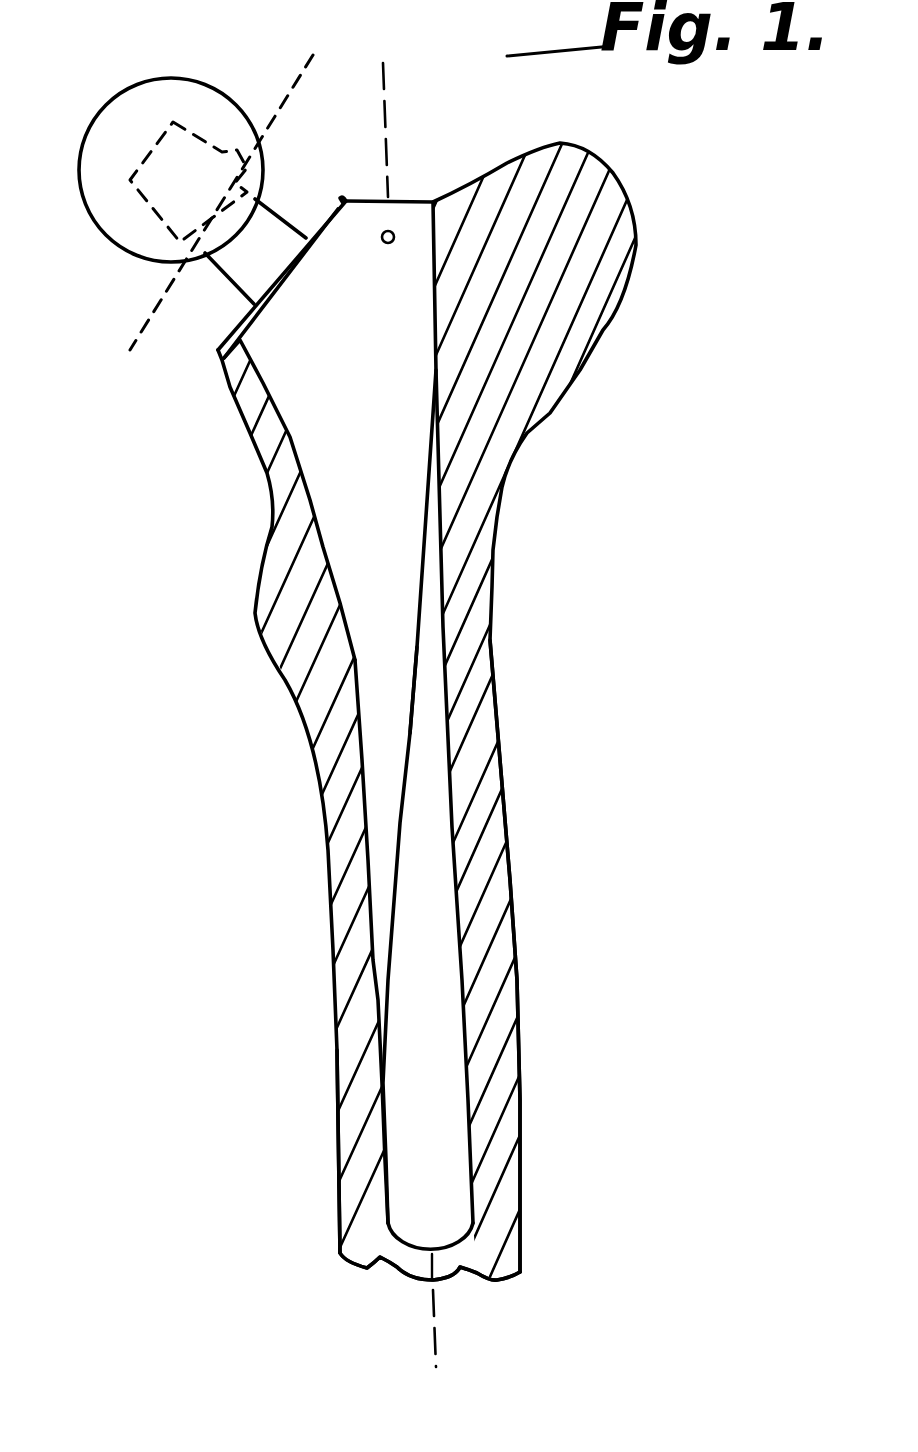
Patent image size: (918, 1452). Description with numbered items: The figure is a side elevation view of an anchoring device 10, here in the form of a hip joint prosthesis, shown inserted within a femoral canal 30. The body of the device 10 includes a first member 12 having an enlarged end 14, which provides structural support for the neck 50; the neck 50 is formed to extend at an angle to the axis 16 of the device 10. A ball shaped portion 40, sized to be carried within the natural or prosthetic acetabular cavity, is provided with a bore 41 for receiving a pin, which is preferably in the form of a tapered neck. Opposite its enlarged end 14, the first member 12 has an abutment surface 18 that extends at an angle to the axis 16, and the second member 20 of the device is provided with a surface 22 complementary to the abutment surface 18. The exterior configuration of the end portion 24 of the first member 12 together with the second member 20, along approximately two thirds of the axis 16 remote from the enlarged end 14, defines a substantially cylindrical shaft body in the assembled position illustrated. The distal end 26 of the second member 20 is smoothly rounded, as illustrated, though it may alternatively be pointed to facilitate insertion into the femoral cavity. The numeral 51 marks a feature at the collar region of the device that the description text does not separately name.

The anchoring device 10 is at (428, 145).
The first member 12 is at (370, 703).
The enlarged end 14 is at (287, 367).
The axis 16 is at (437, 1343).
The abutment surface 18 is at (400, 820).
The second member 20 is at (432, 978).
The surface 22 is at (403, 885).
The end portion 24 is at (367, 765).
The distal end 26 is at (400, 1263).
The femoral canal 30 is at (445, 730).
The ball shaped portion 40 is at (117, 247).
The bore 41 is at (249, 183).
The neck 50 is at (262, 293).
The collar edge 51 is at (344, 199).